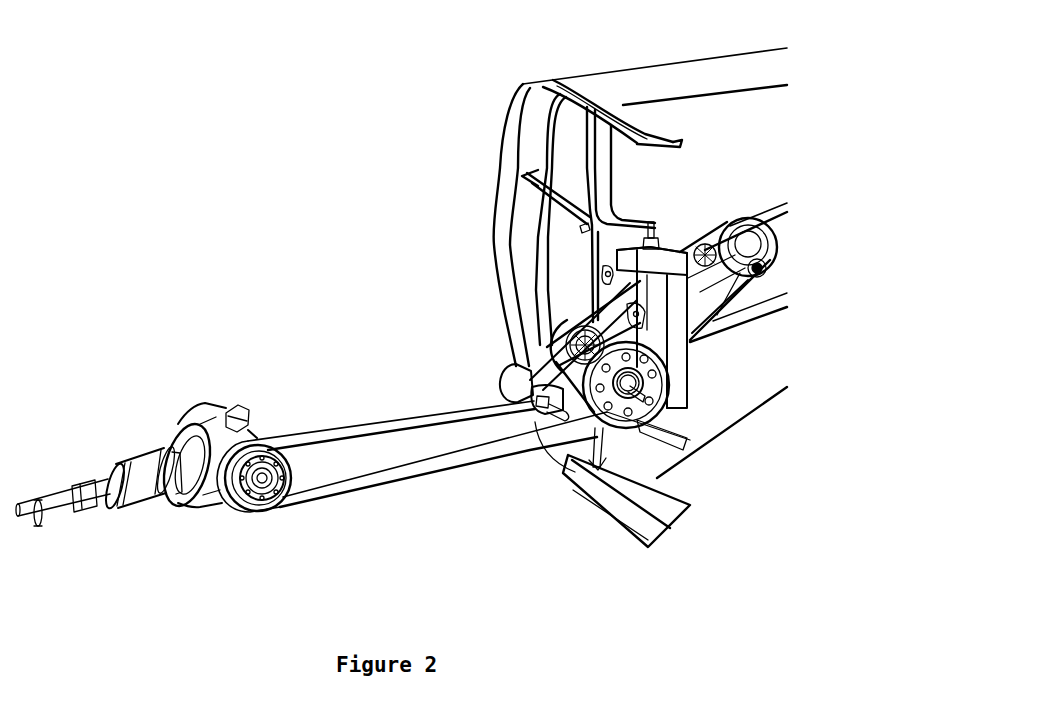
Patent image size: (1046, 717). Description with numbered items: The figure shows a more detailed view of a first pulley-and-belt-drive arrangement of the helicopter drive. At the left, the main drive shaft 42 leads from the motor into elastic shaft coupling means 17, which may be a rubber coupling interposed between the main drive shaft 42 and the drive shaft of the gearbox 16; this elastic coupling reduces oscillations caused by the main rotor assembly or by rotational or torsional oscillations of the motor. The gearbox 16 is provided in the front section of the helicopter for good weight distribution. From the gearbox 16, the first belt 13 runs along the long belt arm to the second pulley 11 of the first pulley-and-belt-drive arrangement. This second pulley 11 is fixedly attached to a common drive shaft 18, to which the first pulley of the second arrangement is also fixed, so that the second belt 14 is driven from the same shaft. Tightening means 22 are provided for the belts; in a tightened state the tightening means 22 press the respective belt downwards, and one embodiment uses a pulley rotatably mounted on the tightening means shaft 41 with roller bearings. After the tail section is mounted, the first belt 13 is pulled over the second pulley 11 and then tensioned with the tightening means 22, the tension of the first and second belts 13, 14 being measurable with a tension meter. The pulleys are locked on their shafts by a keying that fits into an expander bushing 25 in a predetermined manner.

The second pulley of the first pulley-and-belt-drive arrangement 11 is at (655, 370).
The first belt 13 is at (408, 468).
The second belt 14 is at (770, 207).
The gearbox 16 is at (243, 437).
The elastic shaft coupling means 17 is at (132, 466).
The common drive shaft 18 is at (575, 350).
The tightening means 22 is at (683, 263).
The expander bushing 25 is at (618, 392).
The tightening means shaft 41 is at (555, 400).
The main drive shaft 42 is at (55, 512).